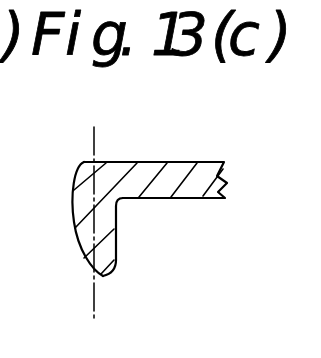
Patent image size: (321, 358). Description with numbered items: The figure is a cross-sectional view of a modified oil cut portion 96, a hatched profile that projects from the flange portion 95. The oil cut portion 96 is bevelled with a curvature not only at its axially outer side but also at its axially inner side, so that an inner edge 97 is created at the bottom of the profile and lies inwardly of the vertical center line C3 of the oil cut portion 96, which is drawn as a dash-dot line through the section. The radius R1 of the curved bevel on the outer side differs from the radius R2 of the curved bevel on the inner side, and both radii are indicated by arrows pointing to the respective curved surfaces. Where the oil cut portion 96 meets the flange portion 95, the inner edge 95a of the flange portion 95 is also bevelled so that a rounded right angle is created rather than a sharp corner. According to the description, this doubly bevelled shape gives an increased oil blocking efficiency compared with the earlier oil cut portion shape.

The flange portion 95 is at (152, 172).
The inner edge of the flange portion 95a is at (84, 162).
The oil cut portion 96 is at (108, 245).
The inner edge 97 is at (104, 272).
The vertical center line C3 is at (94, 154).
The radius at the outer side R1 is at (78, 238).
The radius at the inner side R2 is at (114, 259).